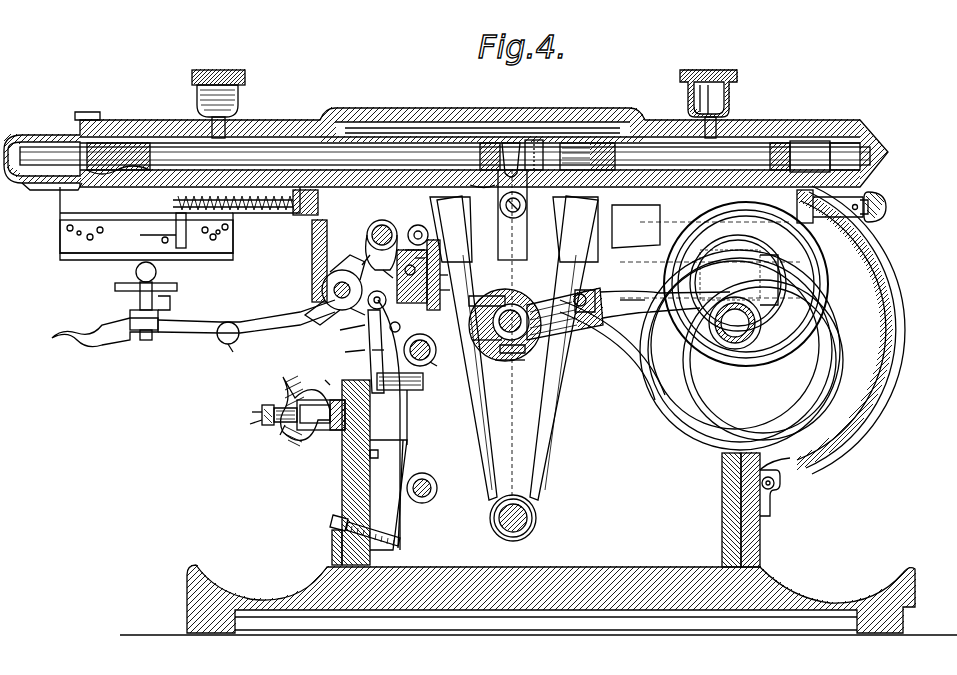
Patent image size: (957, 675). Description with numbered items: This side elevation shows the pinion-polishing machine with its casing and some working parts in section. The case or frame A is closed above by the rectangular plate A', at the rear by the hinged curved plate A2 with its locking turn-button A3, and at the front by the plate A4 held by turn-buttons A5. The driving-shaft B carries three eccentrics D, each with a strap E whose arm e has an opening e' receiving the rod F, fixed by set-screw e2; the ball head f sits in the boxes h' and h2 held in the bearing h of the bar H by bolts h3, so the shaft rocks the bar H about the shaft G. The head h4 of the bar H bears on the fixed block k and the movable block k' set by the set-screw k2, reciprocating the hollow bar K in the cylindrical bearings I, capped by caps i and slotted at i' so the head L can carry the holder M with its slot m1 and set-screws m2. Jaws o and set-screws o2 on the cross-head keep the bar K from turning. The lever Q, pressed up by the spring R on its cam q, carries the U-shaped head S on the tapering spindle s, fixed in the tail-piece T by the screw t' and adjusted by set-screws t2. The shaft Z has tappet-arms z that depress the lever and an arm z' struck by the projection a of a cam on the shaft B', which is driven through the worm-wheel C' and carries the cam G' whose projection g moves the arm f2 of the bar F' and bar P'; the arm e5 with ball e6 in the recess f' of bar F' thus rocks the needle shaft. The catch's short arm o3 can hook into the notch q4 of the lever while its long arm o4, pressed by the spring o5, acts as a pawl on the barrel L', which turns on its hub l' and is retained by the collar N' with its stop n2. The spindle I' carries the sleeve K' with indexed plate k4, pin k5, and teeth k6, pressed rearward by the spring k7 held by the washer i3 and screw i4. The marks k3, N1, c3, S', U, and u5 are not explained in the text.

The case or frame A is at (551, 542).
The rectangular plate A' is at (446, 135).
The vertically-curved plate A2 is at (893, 355).
The locking turn-button A3 is at (888, 212).
The front plate A4 is at (341, 392).
The turn-buttons A5 is at (333, 518).
The round bar K is at (445, 158).
The sleeve K' is at (303, 405).
The detachable cap i is at (456, 146).
The longitudinal slot i' is at (52, 193).
The washer i3 is at (258, 412).
The screw i4 is at (262, 420).
The cylindrical bearings I is at (571, 133).
The spindle I' is at (328, 414).
The fixed block k is at (495, 131).
The movable block k' is at (543, 127).
The set-screw k2 is at (595, 140).
The link k3 is at (486, 180).
The indexed plate k4 is at (327, 420).
The pin k5 is at (218, 103).
The radial teeth k6 is at (709, 103).
The spiral spring k7 is at (282, 436).
The bearing h is at (478, 329).
The box h' is at (482, 304).
The box h2 is at (528, 360).
The bolts h3 is at (528, 348).
The head h4 is at (620, 200).
The bars H is at (517, 348).
The shaft G is at (527, 518).
The cam G' is at (453, 289).
The projection g is at (447, 275).
The rod F is at (536, 324).
The horizontal bar F' is at (443, 275).
The ball-shaped head f is at (510, 321).
The recess f' is at (414, 231).
The radial arm f2 is at (401, 324).
The encircling-strap E is at (630, 400).
The arm e is at (654, 301).
The axial opening e' is at (588, 296).
The set-screw e2 is at (580, 295).
The arm e5 is at (425, 250).
The ball-shaped bearing e6 is at (425, 258).
The eccentrics D is at (747, 350).
The worm-wheel C' is at (724, 284).
The driving-shaft B is at (735, 323).
The shaft B' is at (635, 233).
The shaft Z is at (370, 245).
The tappet-arms z is at (381, 273).
The arm z' is at (358, 250).
The projection a is at (387, 364).
The cam q is at (357, 307).
The notch q4 is at (335, 290).
The tail-piece T is at (381, 298).
The jaws o is at (384, 425).
The set-screws o2 is at (439, 365).
The short arm o3 is at (360, 332).
The long arm o4 is at (380, 357).
The spring o5 is at (360, 354).
The bar P' is at (406, 362).
The rod N1 is at (416, 417).
The collar N' is at (136, 267).
The spring R is at (412, 482).
The head L is at (180, 218).
The barrel L' is at (388, 495).
The central hub l' is at (356, 415).
The holder M is at (146, 236).
The slot m1 is at (205, 224).
The set-screws m2 is at (97, 224).
The pin c3 is at (163, 230).
The stop arm n2 is at (381, 453).
The spindle s is at (258, 212).
The U-shaped head S is at (134, 318).
The screw head S' is at (146, 272).
The clip U is at (170, 301).
The bar u5 is at (115, 290).
The lever Q is at (222, 325).
The screw t' is at (150, 345).
The set-screws t2 is at (235, 353).